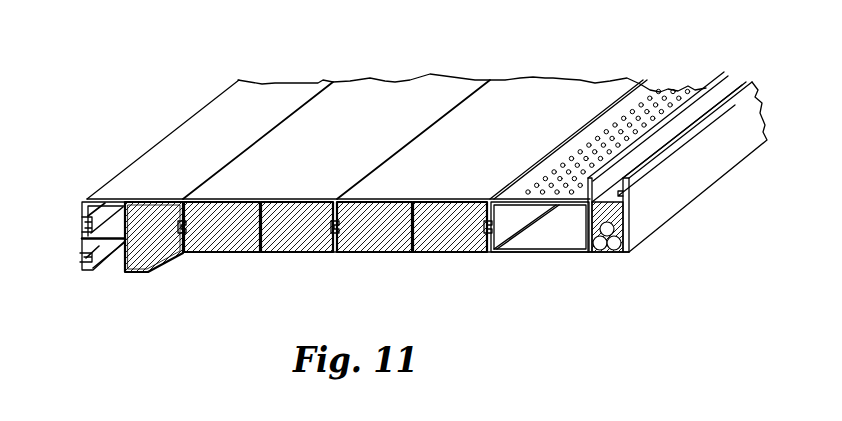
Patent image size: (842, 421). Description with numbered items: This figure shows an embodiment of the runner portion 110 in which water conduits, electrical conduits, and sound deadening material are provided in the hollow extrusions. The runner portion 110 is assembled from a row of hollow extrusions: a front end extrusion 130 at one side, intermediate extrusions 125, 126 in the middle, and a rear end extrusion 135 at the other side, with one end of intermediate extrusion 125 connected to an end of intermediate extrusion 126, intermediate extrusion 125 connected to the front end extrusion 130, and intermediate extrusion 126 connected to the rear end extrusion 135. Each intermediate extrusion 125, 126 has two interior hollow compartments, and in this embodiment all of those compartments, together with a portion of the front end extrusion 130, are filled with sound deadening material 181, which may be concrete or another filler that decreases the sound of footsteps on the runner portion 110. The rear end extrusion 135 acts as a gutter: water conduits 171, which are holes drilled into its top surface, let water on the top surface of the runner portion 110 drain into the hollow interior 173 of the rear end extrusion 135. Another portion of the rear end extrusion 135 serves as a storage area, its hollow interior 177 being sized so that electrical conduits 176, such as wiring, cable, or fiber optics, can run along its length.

The runner portion 110 is at (575, 318).
The intermediate extrusion 125 is at (230, 254).
The intermediate extrusion 126 is at (446, 253).
The front end extrusion 130 is at (132, 276).
The rear end extrusion 135 is at (589, 254).
The water conduits 171 is at (647, 95).
The hollow interior 173 is at (518, 246).
The electrical conduits 176 is at (598, 249).
The hollow interior 177 is at (586, 224).
The sound deadening material 181 is at (302, 233).